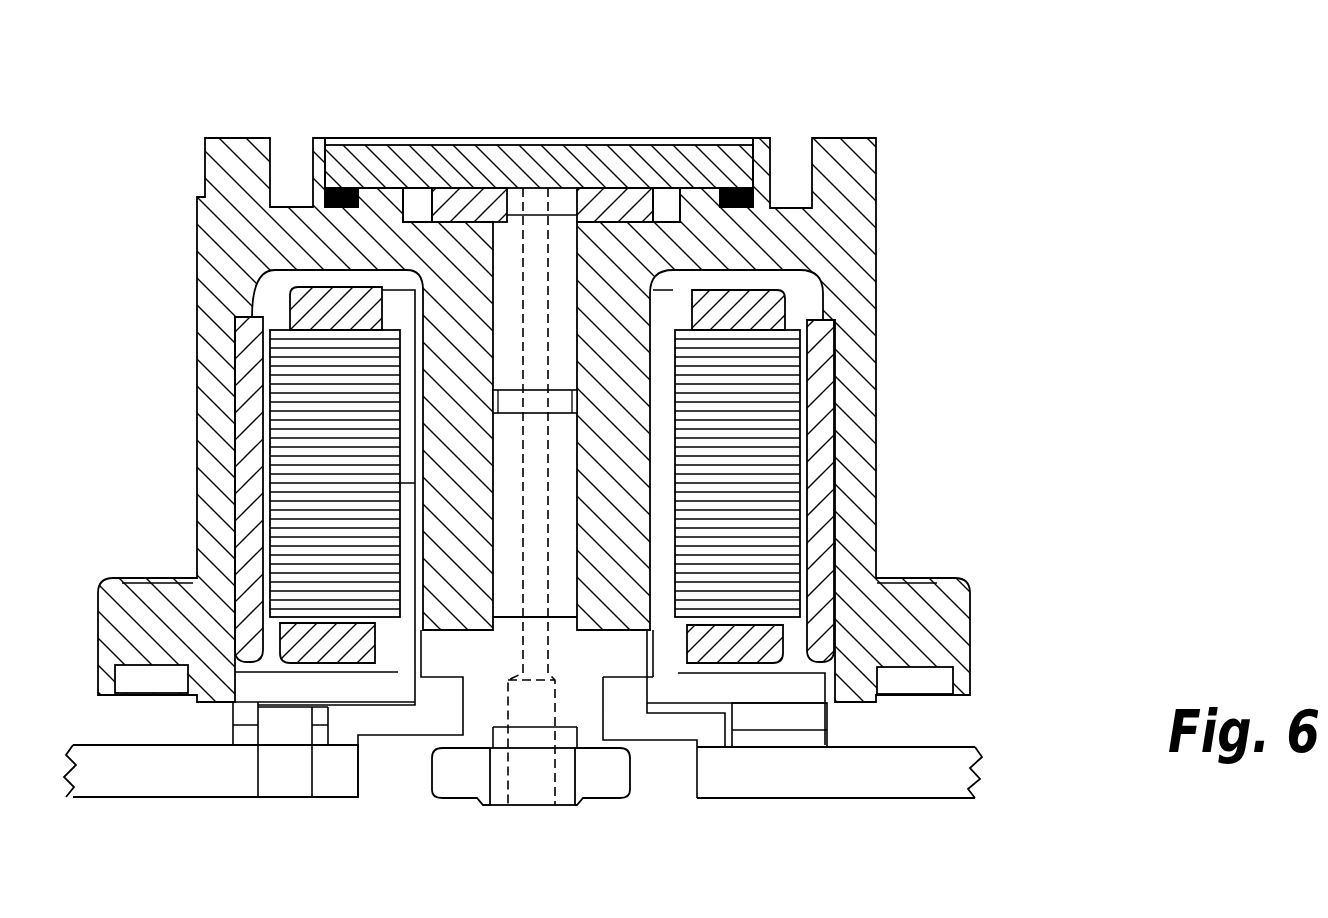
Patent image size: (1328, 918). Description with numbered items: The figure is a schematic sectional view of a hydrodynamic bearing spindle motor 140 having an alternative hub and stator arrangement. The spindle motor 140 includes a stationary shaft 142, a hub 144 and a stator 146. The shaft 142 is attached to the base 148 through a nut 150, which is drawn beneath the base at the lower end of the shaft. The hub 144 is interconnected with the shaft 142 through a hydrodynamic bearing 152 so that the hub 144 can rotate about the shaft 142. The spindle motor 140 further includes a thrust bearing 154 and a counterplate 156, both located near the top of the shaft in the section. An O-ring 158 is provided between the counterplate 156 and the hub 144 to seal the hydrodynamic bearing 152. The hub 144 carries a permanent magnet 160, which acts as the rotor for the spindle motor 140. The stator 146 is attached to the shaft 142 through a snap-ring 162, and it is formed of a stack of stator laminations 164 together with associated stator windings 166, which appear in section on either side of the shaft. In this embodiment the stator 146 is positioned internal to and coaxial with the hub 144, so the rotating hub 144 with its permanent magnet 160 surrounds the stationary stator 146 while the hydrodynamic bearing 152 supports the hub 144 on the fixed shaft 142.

The hydrodynamic bearing spindle motor 140 is at (800, 128).
The stationary shaft 142 is at (563, 207).
The hub 144 is at (882, 221).
The stator 146 is at (760, 402).
The base 148 is at (788, 800).
The nut 150 is at (458, 800).
The hydrodynamic bearing 152 is at (485, 285).
The thrust bearing 154 is at (472, 197).
The counterplate 156 is at (421, 186).
The O-ring 158 is at (323, 190).
The permanent magnet 160 is at (833, 470).
The snap-ring 162 is at (672, 690).
The stator laminations 164 is at (800, 543).
The stator windings 166 is at (783, 640).